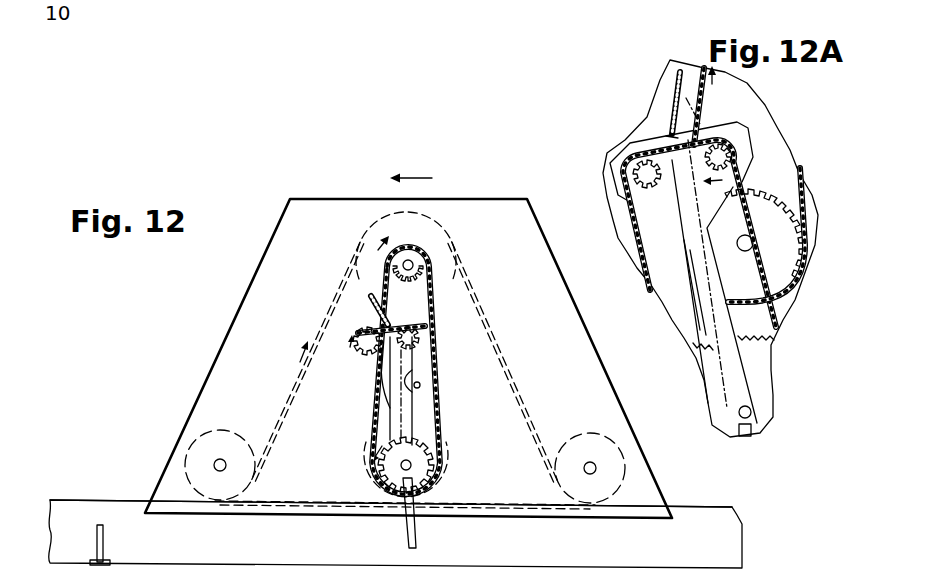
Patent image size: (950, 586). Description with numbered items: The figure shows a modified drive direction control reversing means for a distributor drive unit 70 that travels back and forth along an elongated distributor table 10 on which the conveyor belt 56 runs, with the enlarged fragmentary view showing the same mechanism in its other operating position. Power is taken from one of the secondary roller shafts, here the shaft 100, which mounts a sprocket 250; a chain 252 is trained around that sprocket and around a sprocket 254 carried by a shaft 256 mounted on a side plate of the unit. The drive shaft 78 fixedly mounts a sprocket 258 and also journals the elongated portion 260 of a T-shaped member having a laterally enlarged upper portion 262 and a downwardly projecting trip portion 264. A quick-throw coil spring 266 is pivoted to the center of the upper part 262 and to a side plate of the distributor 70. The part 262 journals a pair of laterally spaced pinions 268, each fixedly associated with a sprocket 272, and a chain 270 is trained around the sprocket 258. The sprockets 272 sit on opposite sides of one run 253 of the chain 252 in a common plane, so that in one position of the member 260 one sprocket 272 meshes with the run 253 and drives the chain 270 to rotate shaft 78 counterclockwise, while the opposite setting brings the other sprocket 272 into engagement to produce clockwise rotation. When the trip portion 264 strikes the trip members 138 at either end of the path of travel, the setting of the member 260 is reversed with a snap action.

In FIG. 12, the distributor table 10 is at (55, 522).
In FIG. 12, the conveyor belt 56 is at (84, 498).
In FIG. 12, the distributor drive unit 70 is at (230, 328).
In FIG. 12, the drive shaft 78 is at (411, 465).
In FIG. 12A, the drive shaft 78 is at (739, 413).
In FIG. 12, the fourth shaft 100 is at (413, 262).
In FIG. 12, the trip members 138 is at (104, 539).
In FIG. 12, the sprocket 250 is at (420, 272).
In FIG. 12, the chain 252 is at (432, 318).
In FIG. 12, the run of chain 253 is at (388, 288).
In FIG. 12A, the run of chain 253 is at (700, 68).
In FIG. 12, the sprocket 254 is at (421, 388).
In FIG. 12, the shaft 256 is at (414, 382).
In FIG. 12, the sprocket 258 is at (425, 447).
In FIG. 12A, the sprocket 258 is at (698, 358).
In FIG. 12, the elongated portion of T-shaped member 260 is at (378, 413).
In FIG. 12A, the elongated portion of T-shaped member 260 is at (700, 300).
In FIG. 12, the upper portion of T-shaped member 262 is at (392, 344).
In FIG. 12A, the upper portion of T-shaped member 262 is at (650, 204).
In FIG. 12, the trip portion 264 is at (411, 538).
In FIG. 12A, the trip portion 264 is at (748, 437).
In FIG. 12, the coil spring 266 is at (377, 307).
In FIG. 12A, the coil spring 266 is at (675, 92).
In FIG. 12A, the pinions 268 is at (630, 166).
In FIG. 12, the chain 270 is at (378, 430).
In FIG. 12A, the chain 270 is at (640, 248).
In FIG. 12A, the sprockets 272 is at (622, 179).